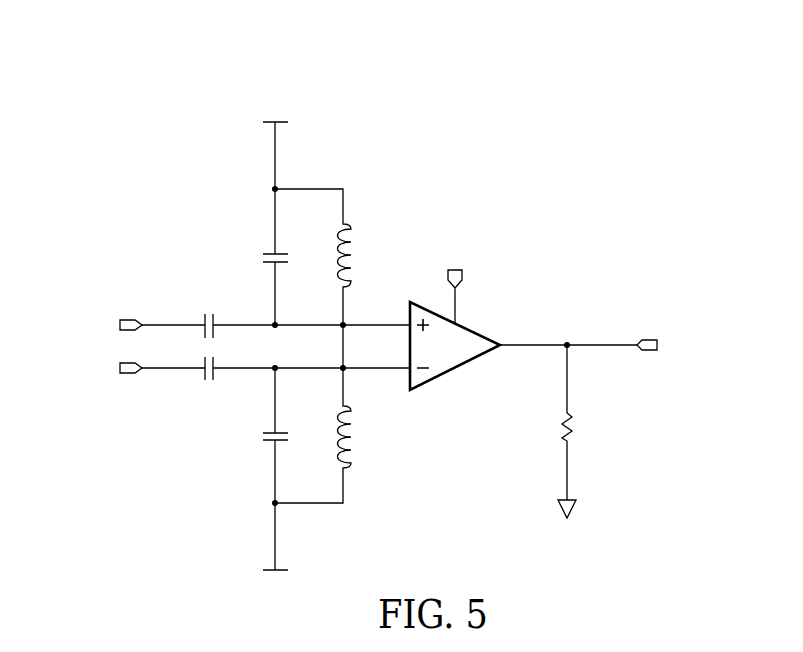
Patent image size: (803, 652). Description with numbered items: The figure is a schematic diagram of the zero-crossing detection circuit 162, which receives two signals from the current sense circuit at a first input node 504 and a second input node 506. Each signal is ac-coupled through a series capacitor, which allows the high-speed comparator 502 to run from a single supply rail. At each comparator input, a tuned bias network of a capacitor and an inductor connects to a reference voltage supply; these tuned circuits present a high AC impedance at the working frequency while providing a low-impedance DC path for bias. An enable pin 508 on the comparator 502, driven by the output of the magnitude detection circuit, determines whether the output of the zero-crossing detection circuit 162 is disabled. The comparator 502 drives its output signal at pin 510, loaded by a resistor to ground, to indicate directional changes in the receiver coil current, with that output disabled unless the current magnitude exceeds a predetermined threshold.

The zero-crossing detection circuit 162 is at (143, 113).
The first input node 504 is at (128, 318).
The second input node 506 is at (128, 378).
The high-speed comparator 502 is at (470, 365).
The enable pin 508 is at (463, 276).
The pin 510 is at (650, 337).